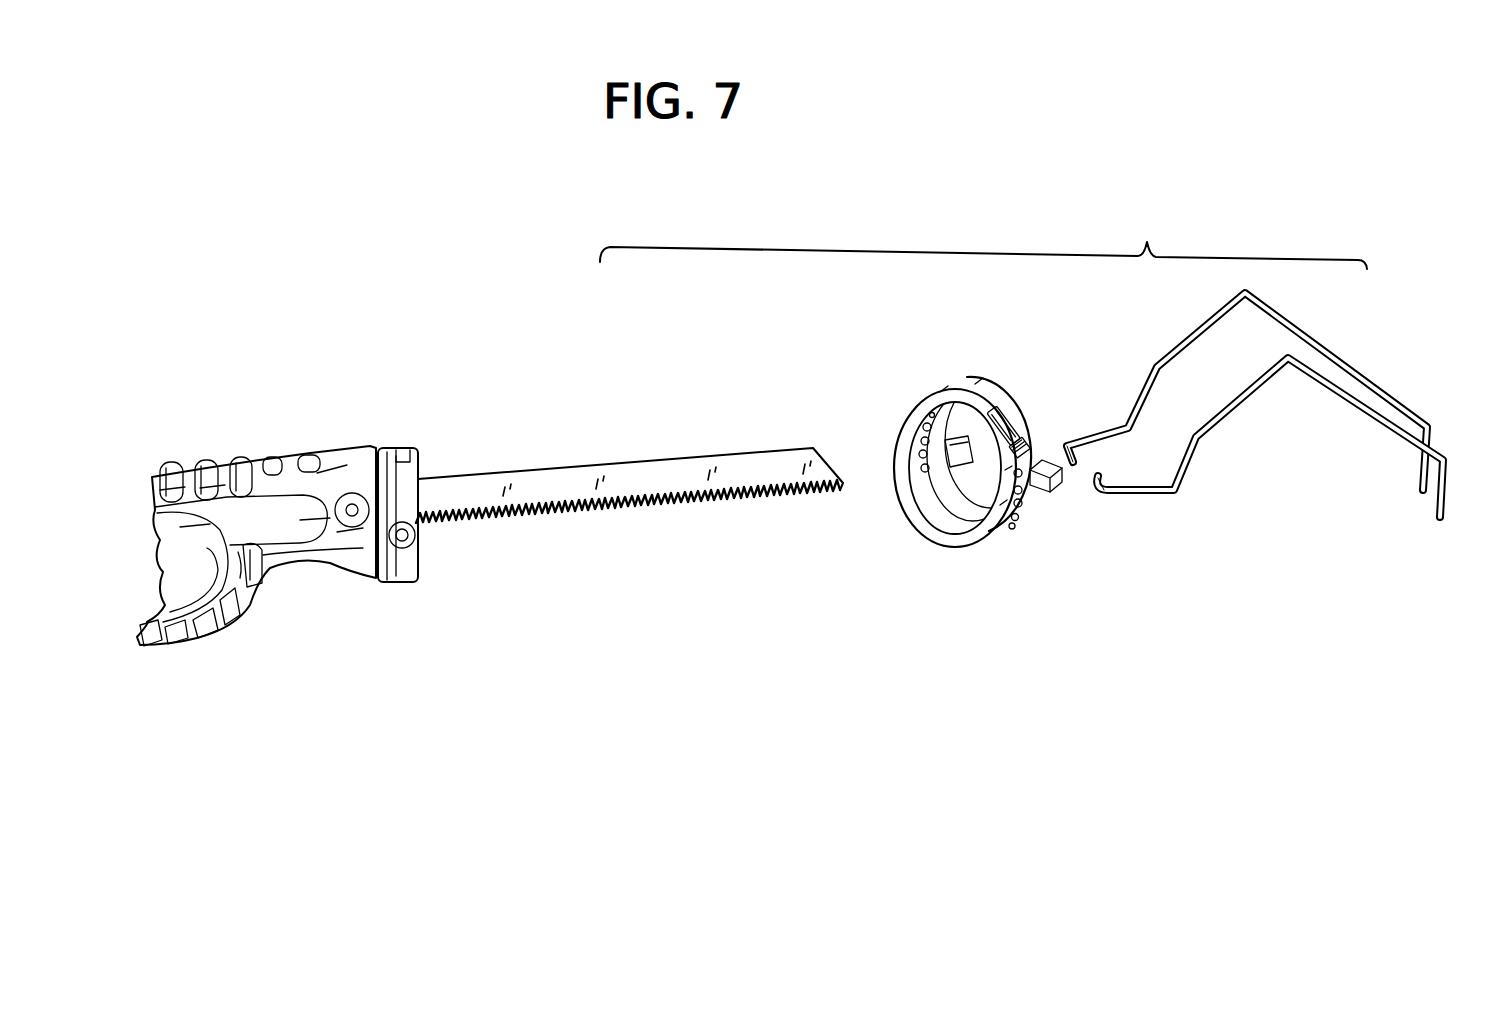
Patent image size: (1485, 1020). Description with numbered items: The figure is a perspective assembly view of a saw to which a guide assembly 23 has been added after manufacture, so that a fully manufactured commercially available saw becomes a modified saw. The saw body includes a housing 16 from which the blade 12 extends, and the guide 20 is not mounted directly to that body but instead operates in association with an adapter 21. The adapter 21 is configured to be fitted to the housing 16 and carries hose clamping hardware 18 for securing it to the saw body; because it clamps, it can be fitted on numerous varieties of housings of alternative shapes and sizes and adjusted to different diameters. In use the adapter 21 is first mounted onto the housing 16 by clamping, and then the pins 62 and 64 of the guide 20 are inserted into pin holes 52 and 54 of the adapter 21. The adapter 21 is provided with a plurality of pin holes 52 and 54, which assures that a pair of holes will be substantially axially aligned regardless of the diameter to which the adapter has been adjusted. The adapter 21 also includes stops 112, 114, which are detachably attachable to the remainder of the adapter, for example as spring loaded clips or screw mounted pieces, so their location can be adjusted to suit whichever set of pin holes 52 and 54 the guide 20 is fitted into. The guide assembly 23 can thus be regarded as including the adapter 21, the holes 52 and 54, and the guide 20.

The saw blade 12 is at (790, 447).
The housing 16 is at (284, 572).
The hose clamping hardware 18 is at (994, 405).
The guide 20 is at (1165, 347).
The adapter 21 is at (975, 527).
The guard assembly 23 is at (983, 236).
The pin holes 52 is at (1050, 484).
The pin holes 54 is at (922, 427).
The pin 62 is at (1110, 470).
The pin 64 is at (1064, 452).
The stop 112 is at (1040, 503).
The stop 114 is at (975, 497).